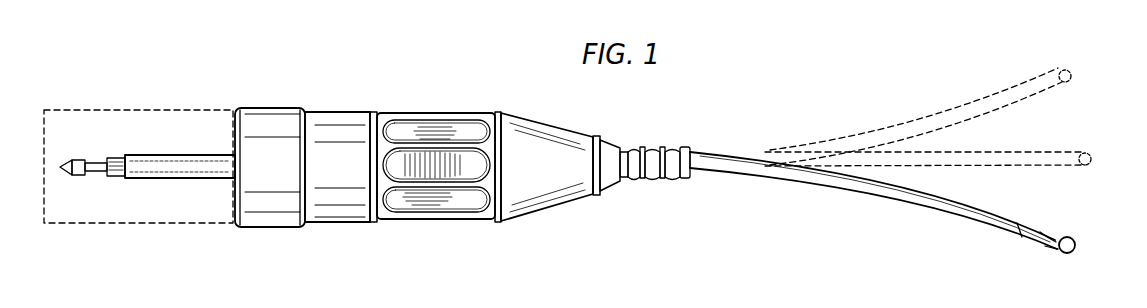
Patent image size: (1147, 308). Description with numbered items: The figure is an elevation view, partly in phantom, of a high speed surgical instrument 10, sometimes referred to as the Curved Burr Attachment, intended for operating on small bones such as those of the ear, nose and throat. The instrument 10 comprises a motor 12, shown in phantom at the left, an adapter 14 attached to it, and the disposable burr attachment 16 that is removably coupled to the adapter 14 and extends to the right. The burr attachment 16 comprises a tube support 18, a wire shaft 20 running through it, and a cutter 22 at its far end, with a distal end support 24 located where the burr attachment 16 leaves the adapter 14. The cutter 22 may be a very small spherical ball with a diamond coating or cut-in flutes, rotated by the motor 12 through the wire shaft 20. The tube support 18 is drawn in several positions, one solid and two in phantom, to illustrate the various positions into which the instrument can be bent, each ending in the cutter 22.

The medical instrument 10 is at (792, 112).
The motor 12 is at (156, 91).
The adapter 14 is at (357, 91).
The burr attachment 16 is at (811, 206).
The tube support 18 is at (955, 210).
The wire shaft 20 is at (1063, 233).
The cutter 22 is at (1064, 256).
The distal end support 24 is at (660, 180).